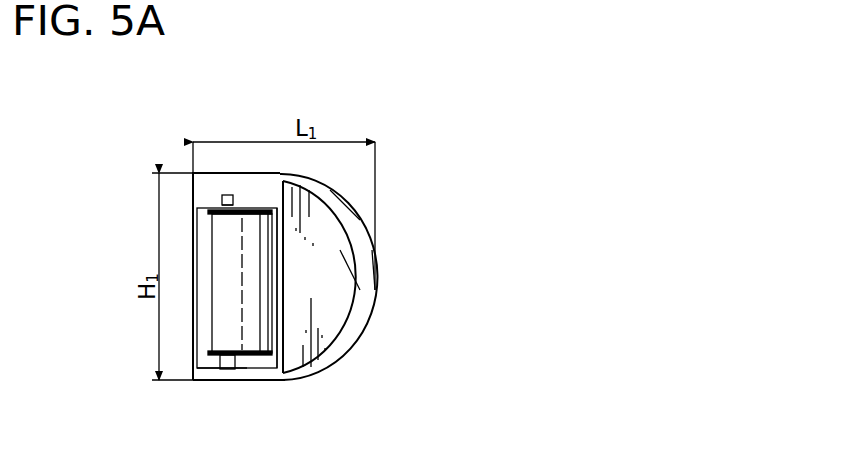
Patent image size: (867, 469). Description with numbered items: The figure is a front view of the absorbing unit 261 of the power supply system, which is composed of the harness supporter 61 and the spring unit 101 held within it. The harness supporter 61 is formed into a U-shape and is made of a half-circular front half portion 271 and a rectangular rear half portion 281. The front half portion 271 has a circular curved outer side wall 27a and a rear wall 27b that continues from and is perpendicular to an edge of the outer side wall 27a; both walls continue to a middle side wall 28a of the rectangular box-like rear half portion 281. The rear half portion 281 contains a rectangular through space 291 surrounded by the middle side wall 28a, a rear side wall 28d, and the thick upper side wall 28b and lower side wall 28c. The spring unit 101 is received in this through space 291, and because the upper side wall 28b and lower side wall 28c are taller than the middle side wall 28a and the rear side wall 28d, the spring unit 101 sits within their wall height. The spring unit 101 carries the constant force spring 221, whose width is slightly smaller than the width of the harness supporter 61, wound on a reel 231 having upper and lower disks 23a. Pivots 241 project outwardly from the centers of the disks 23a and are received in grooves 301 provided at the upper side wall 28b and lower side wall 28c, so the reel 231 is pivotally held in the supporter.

The pivot 241 is at (224, 195).
The rear half portion 281 is at (241, 170).
The middle side wall 28a is at (270, 237).
The front half portion 271 is at (316, 181).
The upper side wall 28b is at (200, 180).
The groove 301 is at (222, 198).
The through space 291 is at (210, 224).
The rear side wall 28d is at (192, 252).
The spring unit 101 is at (203, 296).
The constant force spring 221 is at (220, 311).
The reel 231 is at (200, 358).
The lower side wall 28c is at (200, 382).
The disk 23a is at (245, 362).
The harness supporter 61 is at (350, 203).
The absorbing unit 261 is at (552, 221).
The rear wall 27b is at (347, 267).
The outer side wall 27a is at (378, 283).